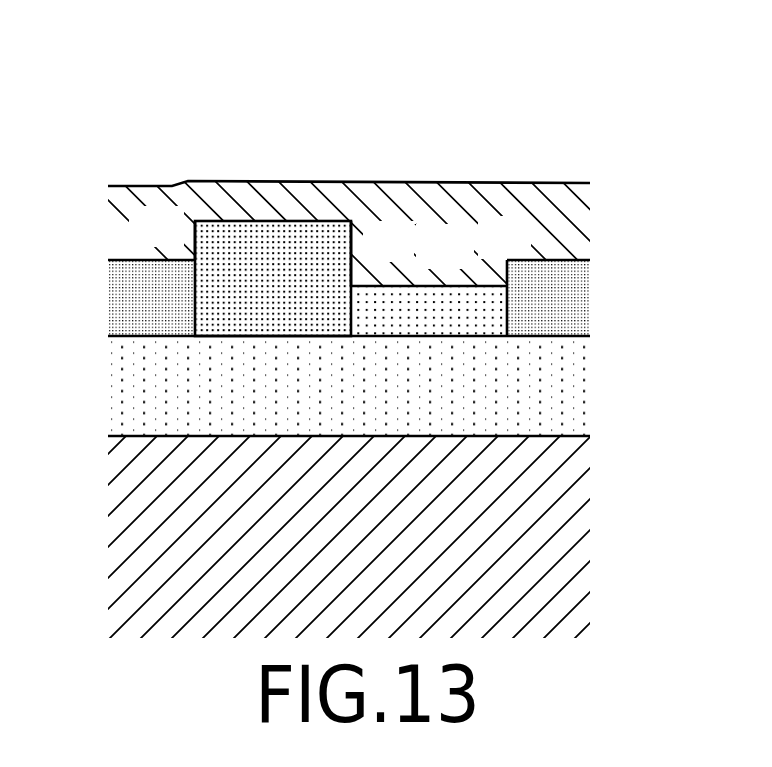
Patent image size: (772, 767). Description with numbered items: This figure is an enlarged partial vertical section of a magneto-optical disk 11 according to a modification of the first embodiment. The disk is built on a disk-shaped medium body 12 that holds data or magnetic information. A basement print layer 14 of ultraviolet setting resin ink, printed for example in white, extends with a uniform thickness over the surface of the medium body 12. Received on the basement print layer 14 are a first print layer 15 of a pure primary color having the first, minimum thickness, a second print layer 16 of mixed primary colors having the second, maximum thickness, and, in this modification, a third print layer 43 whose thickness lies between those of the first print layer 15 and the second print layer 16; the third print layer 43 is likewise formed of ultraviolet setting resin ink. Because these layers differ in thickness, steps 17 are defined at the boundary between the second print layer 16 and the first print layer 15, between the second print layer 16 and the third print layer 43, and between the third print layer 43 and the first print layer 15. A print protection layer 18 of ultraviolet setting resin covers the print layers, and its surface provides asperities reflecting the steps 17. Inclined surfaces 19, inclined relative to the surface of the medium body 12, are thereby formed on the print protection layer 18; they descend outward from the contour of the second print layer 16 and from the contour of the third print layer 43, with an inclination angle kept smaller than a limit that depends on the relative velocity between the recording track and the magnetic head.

The magneto-optical disk 11 is at (230, 135).
The medium body 12 is at (572, 436).
The basement print layer 14 is at (572, 336).
The first print layer 15 is at (429, 285).
The second print layer 16 is at (253, 221).
The steps 17 is at (193, 250).
The print protection layer 18 is at (567, 184).
The inclined surfaces 19 is at (194, 184).
The third print layer 43 is at (120, 258).